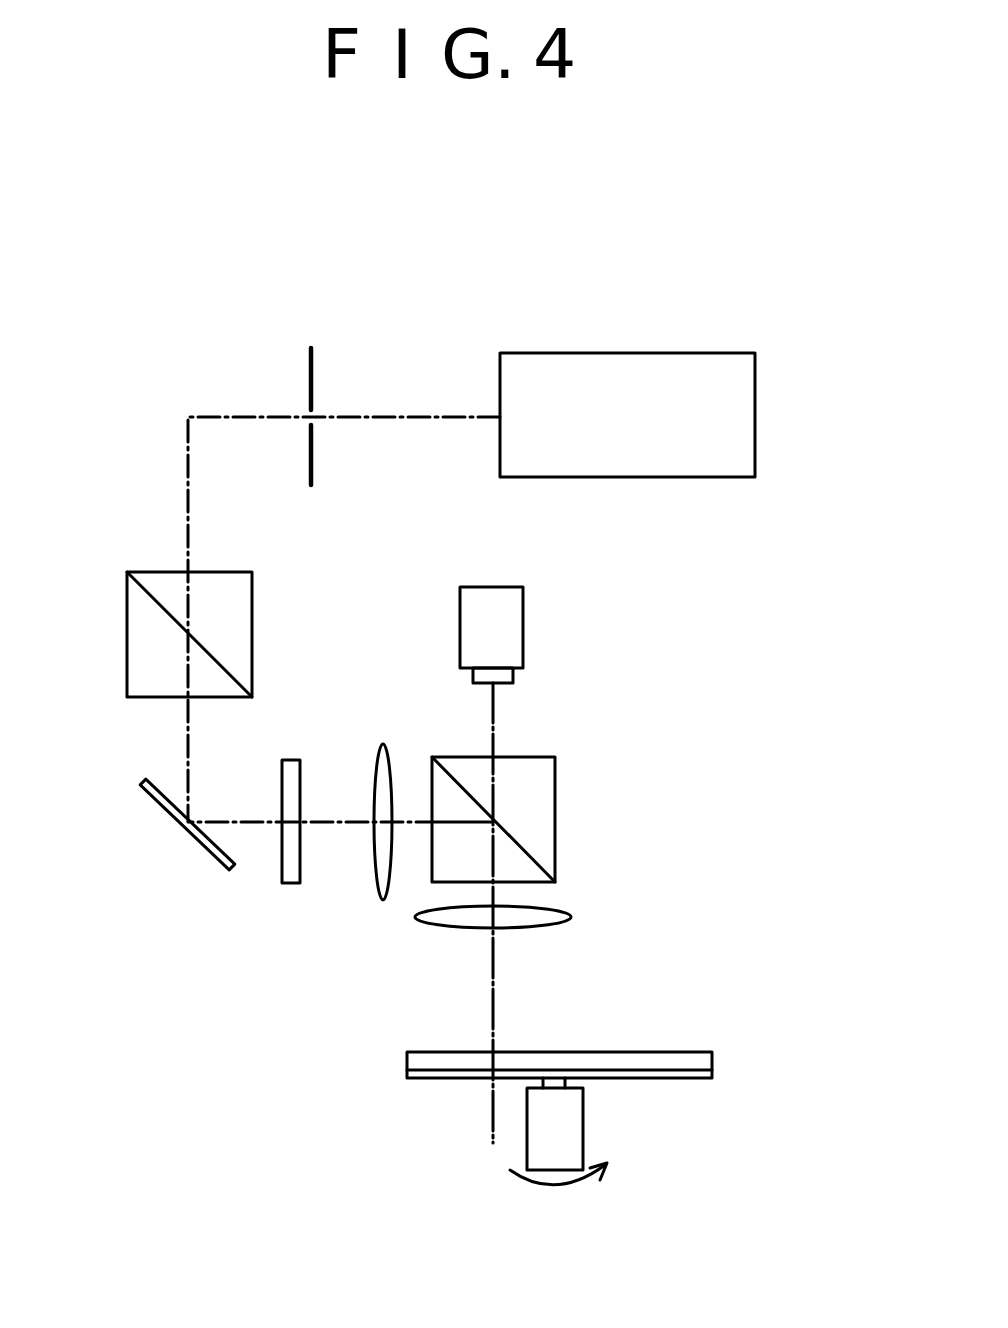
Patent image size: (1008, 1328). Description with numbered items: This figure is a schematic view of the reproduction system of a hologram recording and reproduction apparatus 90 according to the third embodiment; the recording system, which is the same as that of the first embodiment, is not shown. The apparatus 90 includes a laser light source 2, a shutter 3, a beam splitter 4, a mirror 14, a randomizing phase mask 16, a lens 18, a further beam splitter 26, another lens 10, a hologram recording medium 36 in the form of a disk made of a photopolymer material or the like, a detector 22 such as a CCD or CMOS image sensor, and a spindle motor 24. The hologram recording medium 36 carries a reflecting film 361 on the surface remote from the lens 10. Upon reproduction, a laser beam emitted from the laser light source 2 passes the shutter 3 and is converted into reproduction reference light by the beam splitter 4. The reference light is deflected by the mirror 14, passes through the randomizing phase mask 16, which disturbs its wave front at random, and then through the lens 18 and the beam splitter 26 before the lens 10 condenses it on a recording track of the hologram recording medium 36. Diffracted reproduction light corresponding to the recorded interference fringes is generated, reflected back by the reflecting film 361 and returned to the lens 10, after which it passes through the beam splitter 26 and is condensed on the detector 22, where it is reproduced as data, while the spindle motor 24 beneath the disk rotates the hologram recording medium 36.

The hologram recording and reproduction apparatus 90 is at (548, 327).
The laser light source 2 is at (755, 417).
The shutter 3 is at (318, 375).
The beam splitter 4 is at (252, 638).
The mirror 14 is at (168, 813).
The randomizing phase mask 16 is at (290, 760).
The lens 18 is at (378, 888).
The detector 22 is at (523, 637).
The beam splitter 26 is at (555, 778).
The lens 10 is at (420, 927).
The hologram recording medium 36 is at (690, 1052).
The reflecting film 361 is at (425, 1078).
The spindle motor 24 is at (583, 1122).